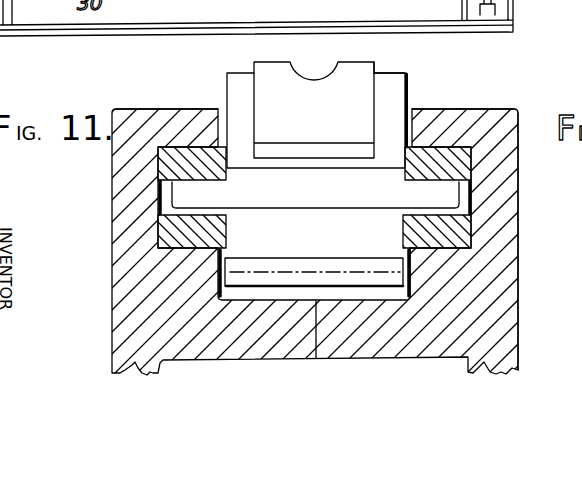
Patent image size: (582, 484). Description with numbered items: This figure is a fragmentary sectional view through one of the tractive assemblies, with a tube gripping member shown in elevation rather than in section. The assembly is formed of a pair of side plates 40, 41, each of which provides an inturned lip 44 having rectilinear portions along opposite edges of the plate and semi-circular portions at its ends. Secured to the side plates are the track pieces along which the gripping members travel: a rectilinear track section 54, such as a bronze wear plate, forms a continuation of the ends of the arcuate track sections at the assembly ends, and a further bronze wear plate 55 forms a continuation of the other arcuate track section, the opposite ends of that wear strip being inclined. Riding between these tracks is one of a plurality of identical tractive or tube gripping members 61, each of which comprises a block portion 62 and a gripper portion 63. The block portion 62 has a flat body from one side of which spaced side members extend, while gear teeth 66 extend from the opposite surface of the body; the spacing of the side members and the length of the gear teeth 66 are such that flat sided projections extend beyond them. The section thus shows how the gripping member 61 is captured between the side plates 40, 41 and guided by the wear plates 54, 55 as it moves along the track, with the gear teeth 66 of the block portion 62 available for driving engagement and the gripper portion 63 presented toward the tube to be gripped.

The side plate 40 is at (110, 184).
The side plate 41 is at (520, 193).
The inturned lip 44 is at (182, 120).
The rectilinear track section 54 is at (455, 165).
The bronze wear plate 55 is at (462, 233).
The tube gripping member 61 is at (432, 76).
The block portion 62 is at (420, 95).
The gripper portion 63 is at (389, 68).
The gear teeth 66 is at (398, 277).